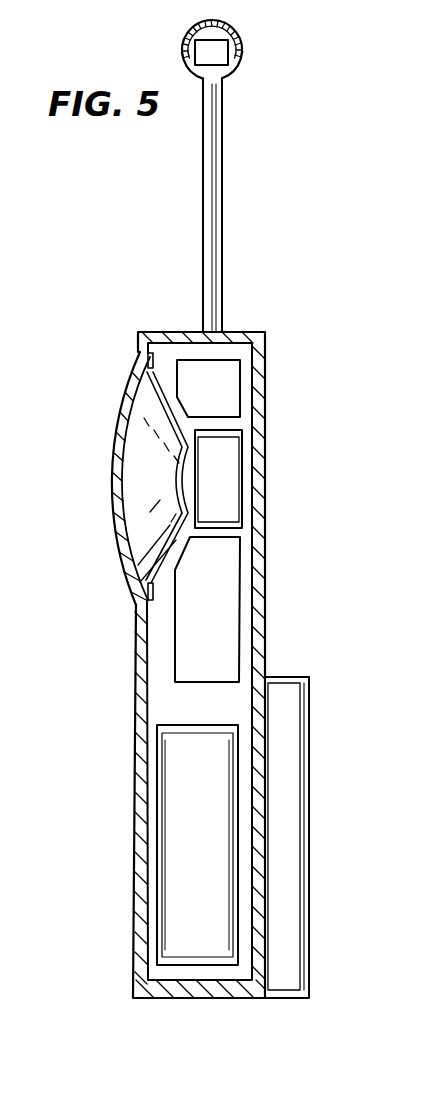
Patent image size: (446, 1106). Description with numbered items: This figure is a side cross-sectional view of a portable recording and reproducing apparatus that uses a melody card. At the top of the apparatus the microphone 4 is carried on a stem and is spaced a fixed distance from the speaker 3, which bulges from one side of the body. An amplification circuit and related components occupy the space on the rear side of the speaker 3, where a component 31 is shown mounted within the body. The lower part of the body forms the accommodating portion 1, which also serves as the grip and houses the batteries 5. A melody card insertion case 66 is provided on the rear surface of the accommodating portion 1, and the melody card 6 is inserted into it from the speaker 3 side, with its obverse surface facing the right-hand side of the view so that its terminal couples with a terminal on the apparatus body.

The accommodating portion 1 is at (120, 698).
The speaker 3 is at (123, 403).
The microphone 4 is at (221, 58).
The batteries 5 is at (193, 788).
The melody card 6 is at (282, 851).
The light source component 31 is at (230, 372).
The melody card insertion case 66 is at (287, 687).